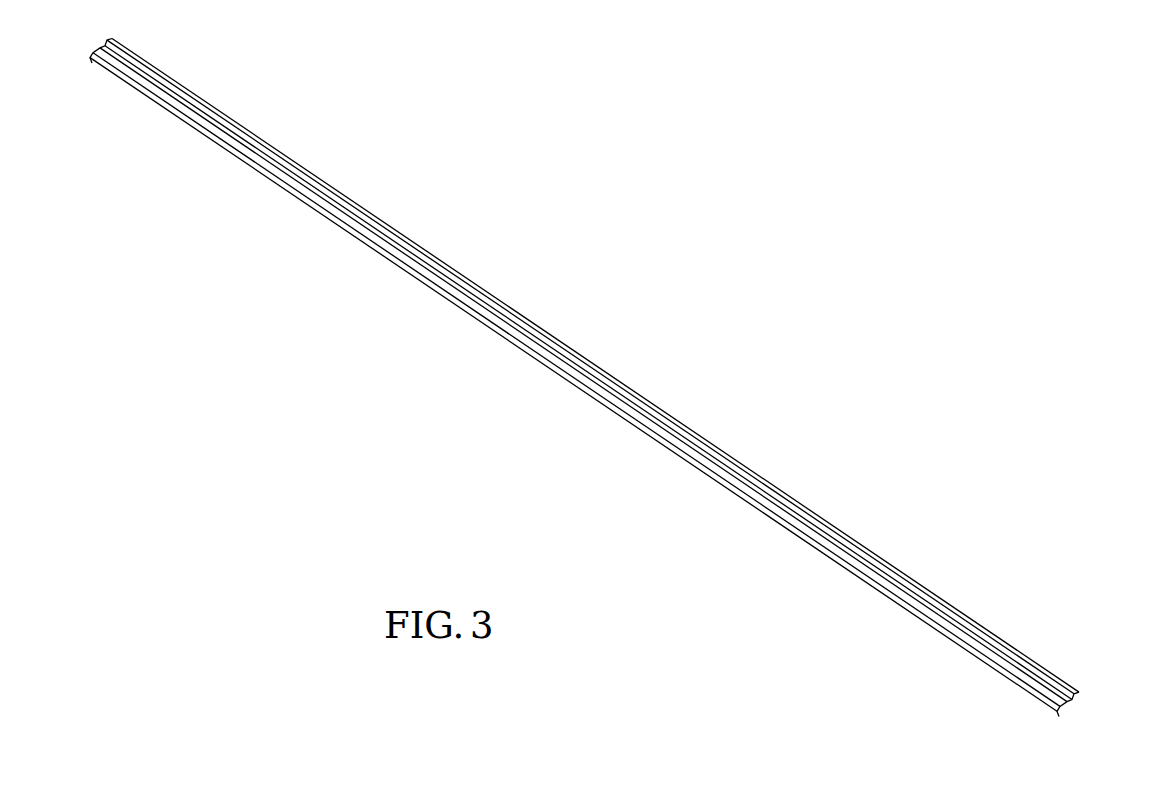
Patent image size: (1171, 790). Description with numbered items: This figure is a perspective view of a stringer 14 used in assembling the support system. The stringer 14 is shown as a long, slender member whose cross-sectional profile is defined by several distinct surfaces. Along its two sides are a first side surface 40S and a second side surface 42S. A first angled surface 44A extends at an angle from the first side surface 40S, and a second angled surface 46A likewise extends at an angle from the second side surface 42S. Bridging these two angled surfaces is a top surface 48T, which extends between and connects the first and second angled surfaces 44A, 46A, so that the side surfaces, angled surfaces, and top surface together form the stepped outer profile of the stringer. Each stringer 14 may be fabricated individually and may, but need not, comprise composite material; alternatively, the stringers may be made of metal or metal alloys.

The stringer 14 is at (912, 497).
The top surface 48T is at (928, 591).
The second side surface 42S is at (1050, 668).
The first side surface 40S is at (977, 660).
The first angled surface 44A is at (1033, 700).
The second angled surface 46A is at (1073, 688).